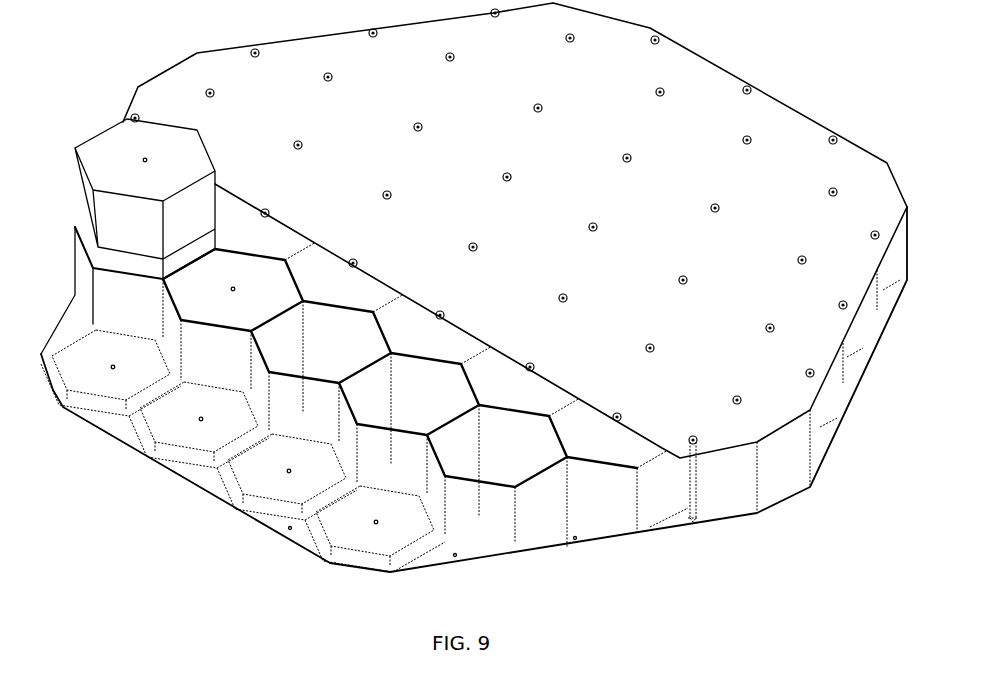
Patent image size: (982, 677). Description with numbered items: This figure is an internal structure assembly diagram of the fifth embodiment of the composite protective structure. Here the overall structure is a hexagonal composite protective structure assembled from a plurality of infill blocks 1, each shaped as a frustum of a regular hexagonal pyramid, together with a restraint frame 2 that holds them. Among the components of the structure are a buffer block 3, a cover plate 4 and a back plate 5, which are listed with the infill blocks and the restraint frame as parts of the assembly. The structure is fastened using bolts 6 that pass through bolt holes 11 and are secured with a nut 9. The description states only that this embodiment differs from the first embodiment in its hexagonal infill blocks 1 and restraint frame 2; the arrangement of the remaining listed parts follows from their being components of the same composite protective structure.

The infill block 1 is at (107, 160).
The restraint frame 2 is at (530, 498).
The buffer block 3 is at (168, 433).
The cover plate 4 is at (250, 80).
The back plate 5 is at (225, 478).
The bolts 6 is at (697, 497).
The nut 9 is at (213, 97).
The bolt holes 11 is at (110, 366).